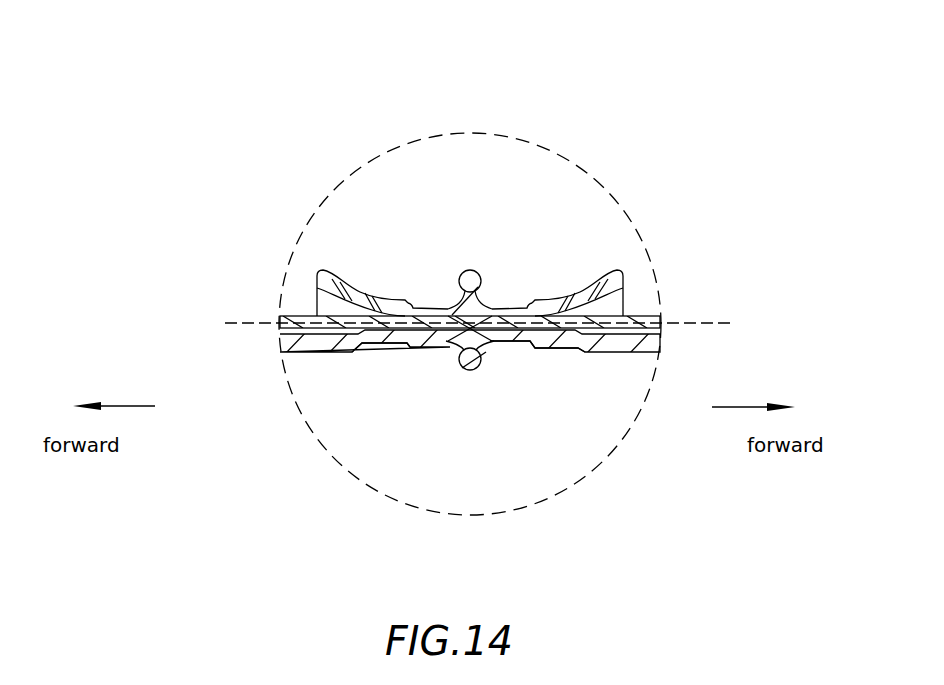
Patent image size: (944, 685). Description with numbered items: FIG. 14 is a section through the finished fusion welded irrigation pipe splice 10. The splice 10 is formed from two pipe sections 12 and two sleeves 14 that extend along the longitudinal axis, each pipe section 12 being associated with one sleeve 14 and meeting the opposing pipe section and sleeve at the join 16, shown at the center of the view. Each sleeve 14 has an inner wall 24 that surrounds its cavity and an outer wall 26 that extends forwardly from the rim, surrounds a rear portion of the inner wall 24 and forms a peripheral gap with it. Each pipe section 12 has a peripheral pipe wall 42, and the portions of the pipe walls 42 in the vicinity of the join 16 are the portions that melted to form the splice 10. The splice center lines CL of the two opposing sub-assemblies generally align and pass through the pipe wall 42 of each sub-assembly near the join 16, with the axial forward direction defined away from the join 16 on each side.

The fusion welded irrigation pipe splice 10 is at (395, 148).
The pipe section 12 is at (303, 315).
The sleeve 14 is at (347, 288).
The join 16 is at (470, 268).
The inner wall 24 is at (355, 350).
The outer wall 26 is at (392, 300).
The pipe wall 42 is at (305, 340).
The splice center line CL is at (217, 325).